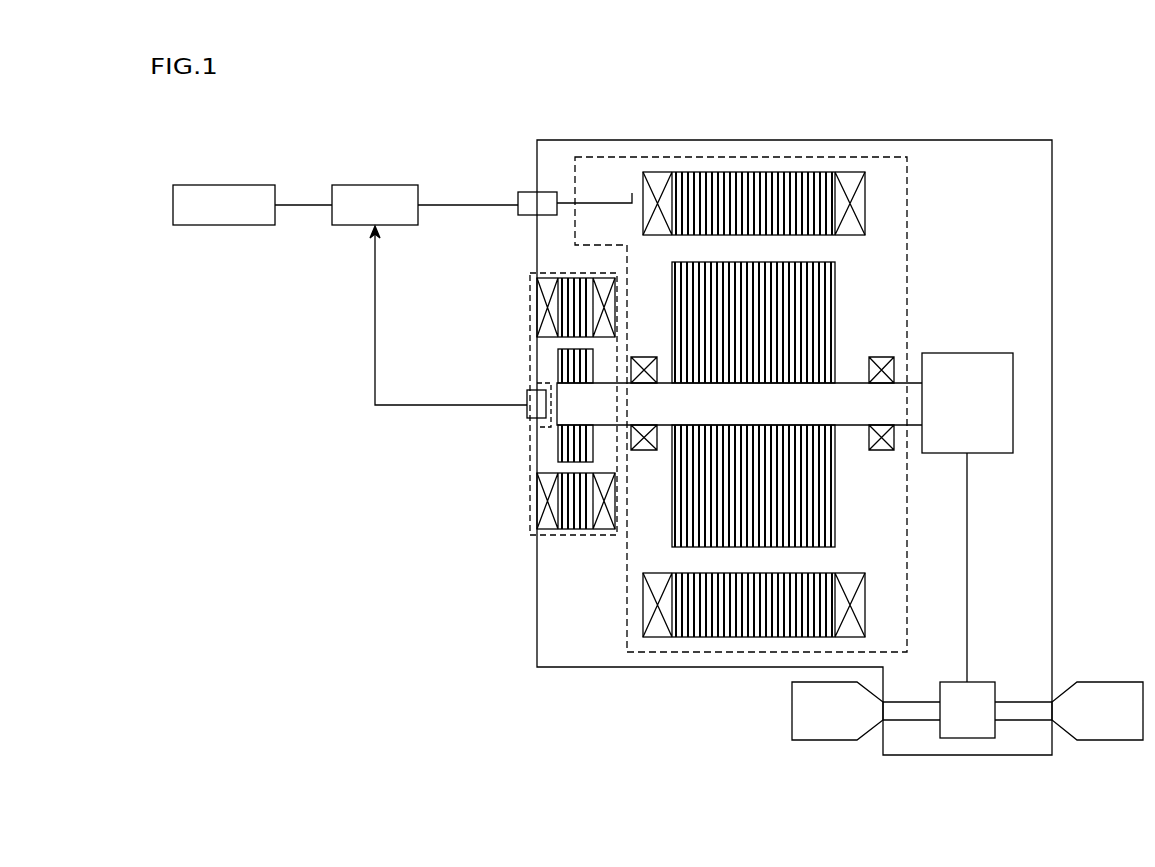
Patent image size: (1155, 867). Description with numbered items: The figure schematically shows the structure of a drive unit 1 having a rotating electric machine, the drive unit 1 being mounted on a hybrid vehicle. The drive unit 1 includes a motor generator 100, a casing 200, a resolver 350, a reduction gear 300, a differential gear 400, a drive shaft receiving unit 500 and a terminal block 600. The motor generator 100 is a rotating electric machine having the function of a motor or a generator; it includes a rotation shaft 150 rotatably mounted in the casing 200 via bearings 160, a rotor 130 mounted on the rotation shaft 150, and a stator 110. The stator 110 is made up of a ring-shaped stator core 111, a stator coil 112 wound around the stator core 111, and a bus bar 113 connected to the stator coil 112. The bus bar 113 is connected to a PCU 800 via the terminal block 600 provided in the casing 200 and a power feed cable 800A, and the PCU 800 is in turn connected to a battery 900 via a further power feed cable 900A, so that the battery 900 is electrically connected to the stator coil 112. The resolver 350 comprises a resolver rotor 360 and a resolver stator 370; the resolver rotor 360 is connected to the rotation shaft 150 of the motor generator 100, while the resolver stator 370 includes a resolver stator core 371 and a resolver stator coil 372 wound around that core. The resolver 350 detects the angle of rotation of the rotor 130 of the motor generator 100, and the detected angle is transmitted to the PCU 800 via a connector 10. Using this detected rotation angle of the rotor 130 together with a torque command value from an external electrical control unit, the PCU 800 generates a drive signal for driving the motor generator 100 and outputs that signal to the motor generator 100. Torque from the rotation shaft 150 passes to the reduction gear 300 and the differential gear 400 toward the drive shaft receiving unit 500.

The drive unit 1 is at (1057, 115).
The connector 10 is at (527, 398).
The motor generator 100 is at (899, 152).
The stator 110 is at (865, 100).
The stator core 111 is at (758, 175).
The stator coil 112 is at (658, 178).
The bus bar 113 is at (632, 192).
The rotor 130 is at (837, 308).
The rotation shaft 150 is at (594, 409).
The bearings 160 is at (882, 358).
The casing 200 is at (1053, 206).
The reduction gear 300 is at (1004, 400).
The resolver 350 is at (555, 537).
The resolver rotor 360 is at (560, 366).
The resolver stator 370 is at (473, 280).
The resolver stator core 371 is at (575, 293).
The resolver stator coil 372 is at (538, 312).
The differential gear 400 is at (967, 725).
The drive shaft receiving unit 500 is at (833, 730).
The terminal block 600 is at (521, 190).
The PCU 800 is at (374, 183).
The power feed cable 800A is at (465, 203).
The battery 900 is at (220, 183).
The power feed cable 900A is at (300, 203).